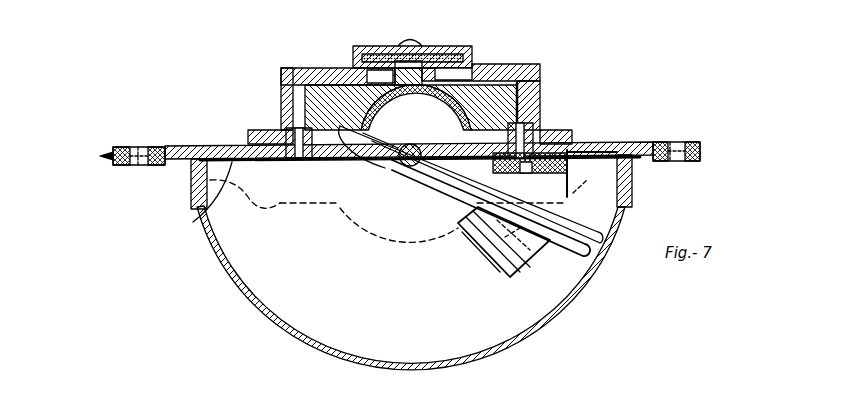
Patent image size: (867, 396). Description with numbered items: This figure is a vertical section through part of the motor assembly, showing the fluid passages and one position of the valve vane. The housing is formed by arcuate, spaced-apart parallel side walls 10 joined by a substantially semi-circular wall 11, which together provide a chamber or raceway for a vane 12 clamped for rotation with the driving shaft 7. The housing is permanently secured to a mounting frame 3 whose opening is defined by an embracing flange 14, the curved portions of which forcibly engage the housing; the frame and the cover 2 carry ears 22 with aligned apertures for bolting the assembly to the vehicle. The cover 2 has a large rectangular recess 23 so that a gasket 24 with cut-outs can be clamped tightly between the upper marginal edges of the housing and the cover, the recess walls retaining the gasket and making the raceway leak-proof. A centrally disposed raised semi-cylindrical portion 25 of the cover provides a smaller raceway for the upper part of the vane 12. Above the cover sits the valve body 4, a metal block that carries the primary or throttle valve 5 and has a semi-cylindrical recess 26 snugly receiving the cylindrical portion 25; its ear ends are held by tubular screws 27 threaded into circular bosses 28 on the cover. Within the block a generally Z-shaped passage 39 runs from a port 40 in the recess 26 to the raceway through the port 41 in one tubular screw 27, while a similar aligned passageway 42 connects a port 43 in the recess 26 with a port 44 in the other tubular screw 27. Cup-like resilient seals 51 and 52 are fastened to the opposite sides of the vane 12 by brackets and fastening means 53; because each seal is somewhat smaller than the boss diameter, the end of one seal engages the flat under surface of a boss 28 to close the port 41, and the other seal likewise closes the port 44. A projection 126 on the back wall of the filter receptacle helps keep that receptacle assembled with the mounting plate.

The cover 2 is at (617, 143).
The mounting frame 3 is at (637, 163).
The valve body 4 is at (542, 78).
The primary or throttle valve 5 is at (466, 47).
The driving shaft 7 is at (410, 168).
The side walls 10 is at (328, 275).
The semi-circular wall 11 is at (593, 280).
The vane 12 is at (580, 245).
The embracing flange 14 is at (299, 203).
The ears 22 is at (115, 158).
The rectangular recess 23 is at (220, 147).
The gasket 24 is at (205, 215).
The raised semi-cylindrical portion 25 is at (382, 163).
The semi-cylindrical recess 26 is at (360, 80).
The screws 27 is at (290, 160).
The circular bosses 28 is at (257, 131).
The Z-shaped passage 39 is at (313, 83).
The port 40 is at (387, 70).
The port 41 is at (303, 163).
The passageway 42 is at (498, 82).
The port 43 is at (425, 108).
The port 44 is at (542, 108).
The resilient seal 51 is at (500, 270).
The resilient seal 52 is at (568, 168).
The brackets and fastening means 53 is at (532, 272).
The projection 126 is at (457, 120).